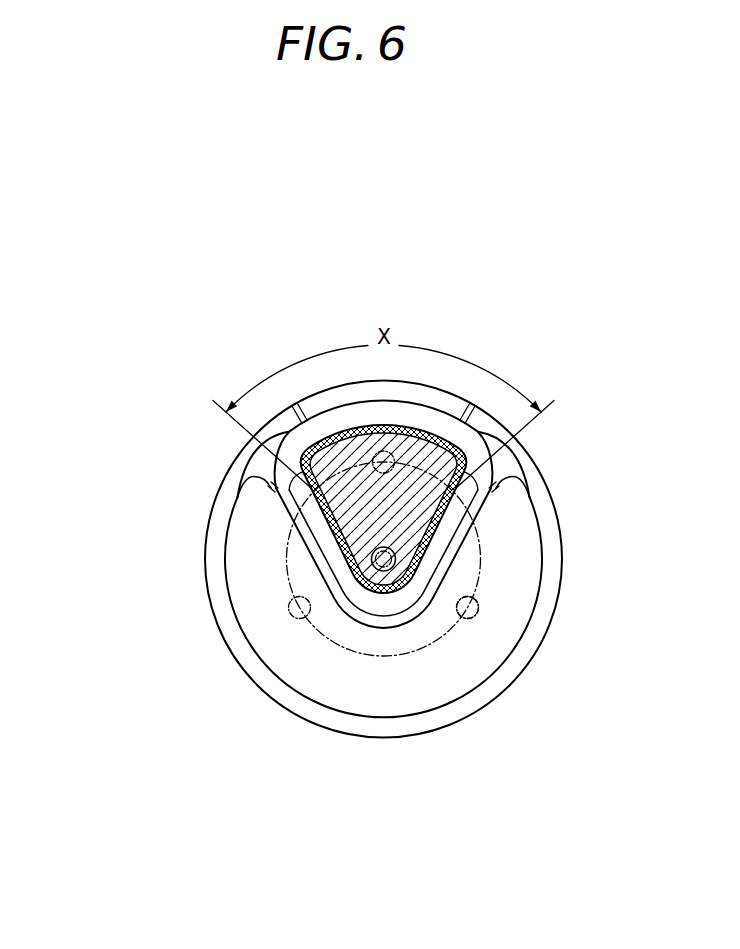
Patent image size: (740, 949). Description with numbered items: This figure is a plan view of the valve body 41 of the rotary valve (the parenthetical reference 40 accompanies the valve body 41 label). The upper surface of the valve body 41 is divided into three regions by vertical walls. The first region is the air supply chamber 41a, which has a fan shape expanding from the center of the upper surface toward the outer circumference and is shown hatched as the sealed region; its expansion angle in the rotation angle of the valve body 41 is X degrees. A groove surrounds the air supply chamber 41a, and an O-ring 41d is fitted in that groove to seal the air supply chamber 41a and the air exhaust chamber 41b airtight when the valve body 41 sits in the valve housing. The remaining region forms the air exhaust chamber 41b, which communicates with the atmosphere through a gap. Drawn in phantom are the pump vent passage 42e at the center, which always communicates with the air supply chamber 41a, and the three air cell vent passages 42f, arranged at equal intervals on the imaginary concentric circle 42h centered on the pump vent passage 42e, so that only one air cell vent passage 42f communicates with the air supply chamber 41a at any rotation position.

The holder 40 is at (311, 559).
The valve body 41 is at (204, 541).
The air supply chamber 41a is at (400, 497).
The air exhaust chamber 41b is at (322, 677).
The O-ring 41d is at (420, 418).
The pump vent passage 42e is at (483, 603).
The air cell vent passages 42f is at (375, 462).
The imaginary concentric circle 42h is at (465, 618).